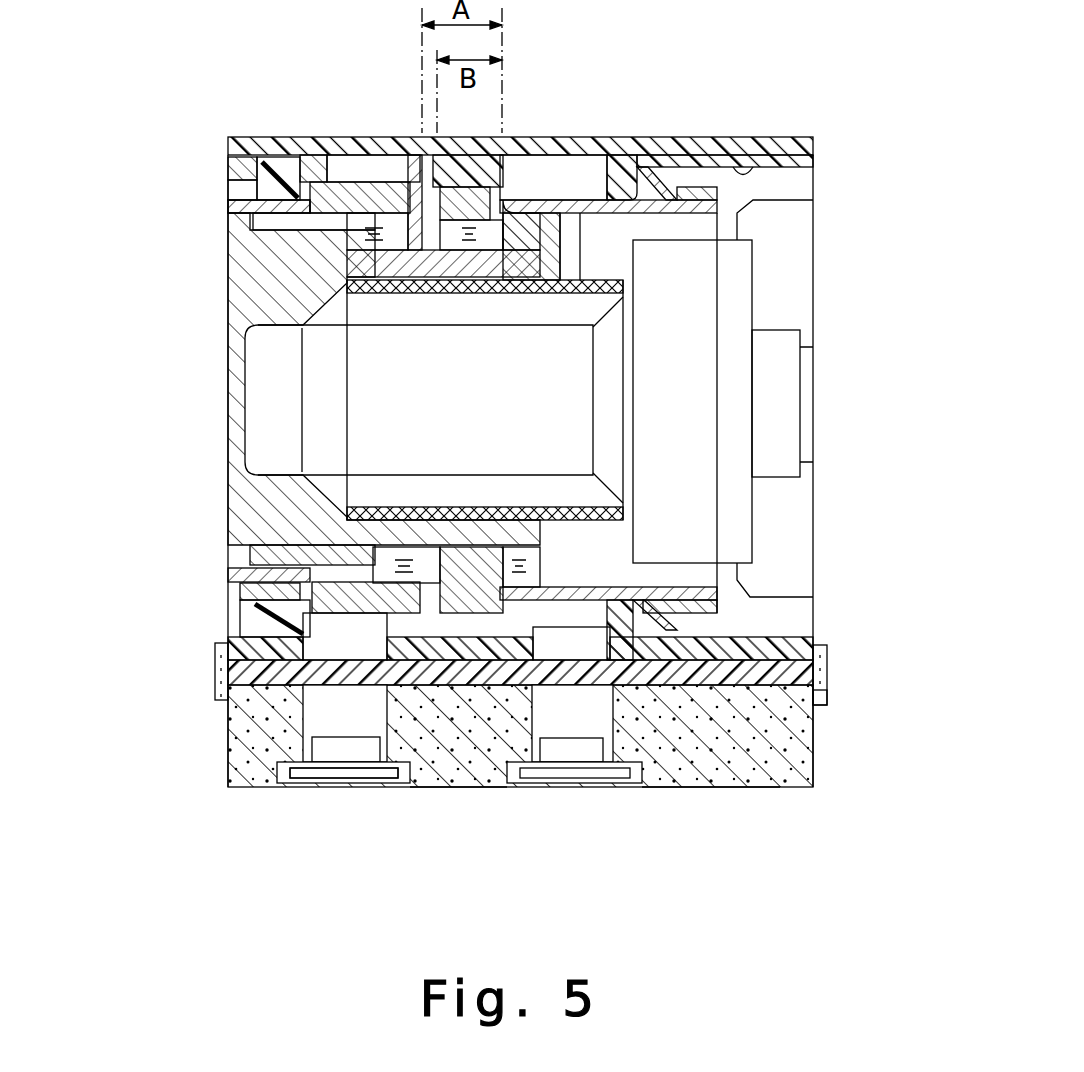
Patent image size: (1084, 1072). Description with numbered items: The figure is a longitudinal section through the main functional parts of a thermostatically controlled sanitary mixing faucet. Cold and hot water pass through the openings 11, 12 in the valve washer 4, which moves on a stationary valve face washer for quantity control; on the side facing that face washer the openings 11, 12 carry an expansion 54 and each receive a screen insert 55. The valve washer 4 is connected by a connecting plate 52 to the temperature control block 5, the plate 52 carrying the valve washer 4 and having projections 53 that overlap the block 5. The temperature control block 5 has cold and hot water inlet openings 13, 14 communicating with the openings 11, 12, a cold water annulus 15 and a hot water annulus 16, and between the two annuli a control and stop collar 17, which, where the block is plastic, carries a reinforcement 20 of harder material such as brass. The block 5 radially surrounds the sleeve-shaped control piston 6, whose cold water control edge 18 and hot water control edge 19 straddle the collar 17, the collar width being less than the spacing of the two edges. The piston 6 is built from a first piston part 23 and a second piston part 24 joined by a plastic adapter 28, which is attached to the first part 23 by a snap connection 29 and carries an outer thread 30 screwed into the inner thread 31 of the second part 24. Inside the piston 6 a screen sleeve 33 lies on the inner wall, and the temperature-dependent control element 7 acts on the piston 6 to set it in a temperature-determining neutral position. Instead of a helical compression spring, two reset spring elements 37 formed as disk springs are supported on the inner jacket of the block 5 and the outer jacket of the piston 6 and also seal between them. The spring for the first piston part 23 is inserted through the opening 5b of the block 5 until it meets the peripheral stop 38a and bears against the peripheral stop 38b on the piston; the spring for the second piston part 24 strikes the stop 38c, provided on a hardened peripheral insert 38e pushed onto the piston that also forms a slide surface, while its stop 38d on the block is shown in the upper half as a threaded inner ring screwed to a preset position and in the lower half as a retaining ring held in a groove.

The valve washer 4 is at (780, 787).
The temperature control block 5 is at (700, 140).
The opening 5b is at (767, 147).
The control piston 6 is at (478, 291).
The temperature-dependent control element 7 is at (535, 412).
The opening 11 is at (327, 733).
The opening 12 is at (552, 733).
The cold water inlet opening 13 is at (322, 671).
The hot water inlet opening 14 is at (707, 787).
The cold water annulus 15 is at (300, 160).
The hot water annulus 16 is at (610, 137).
The control and stop collar 17 is at (457, 787).
The cold water control edge 18 is at (380, 150).
The hot water control edge 19 is at (520, 135).
The reinforcement 20 is at (250, 553).
The first piston part 23 is at (622, 207).
The second piston part 24 is at (230, 573).
The adapter 28 is at (268, 487).
The snap connection 29 is at (560, 580).
The outer thread 30 is at (262, 228).
The inner thread 31 is at (269, 206).
The screen sleeve 33 is at (622, 282).
The reset spring element 37 is at (230, 188).
The peripheral stop 38a is at (647, 140).
The peripheral stop 38b is at (713, 600).
The stop 38c is at (380, 778).
The stop 38d is at (232, 168).
The peripheral insert 38e is at (230, 583).
The connecting plate 52 is at (815, 660).
The projections 53 is at (822, 692).
The expansion 54 is at (283, 787).
The screen insert 55 is at (343, 787).